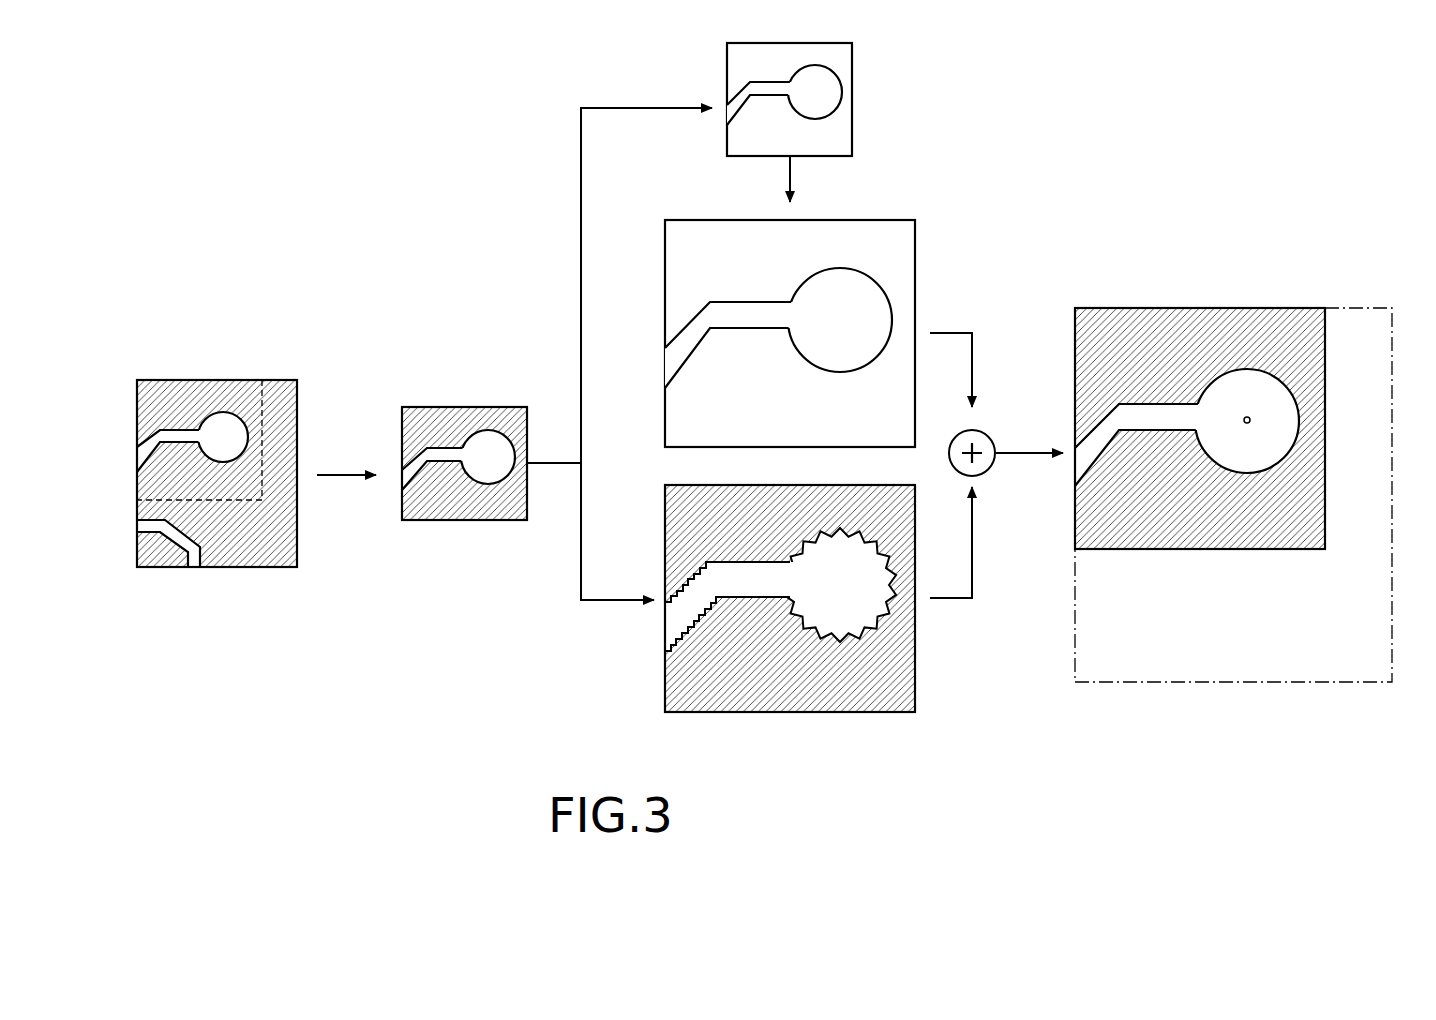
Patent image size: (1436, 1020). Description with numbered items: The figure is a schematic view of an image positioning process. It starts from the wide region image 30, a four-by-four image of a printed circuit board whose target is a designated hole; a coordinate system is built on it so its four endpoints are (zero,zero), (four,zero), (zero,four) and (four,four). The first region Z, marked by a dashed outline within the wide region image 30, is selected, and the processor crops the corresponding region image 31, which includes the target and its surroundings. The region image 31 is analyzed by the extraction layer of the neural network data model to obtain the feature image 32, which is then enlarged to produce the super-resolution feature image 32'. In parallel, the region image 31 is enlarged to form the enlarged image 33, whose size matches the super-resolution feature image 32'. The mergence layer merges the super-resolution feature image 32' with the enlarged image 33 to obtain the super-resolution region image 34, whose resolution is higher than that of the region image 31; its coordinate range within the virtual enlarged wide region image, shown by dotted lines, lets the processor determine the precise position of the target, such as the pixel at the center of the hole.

The wide region image 30 is at (250, 378).
The first region Z is at (263, 458).
The region image 31 is at (452, 400).
The feature image 32 is at (849, 95).
The super-resolution feature image 32' is at (853, 309).
The enlarged image 33 is at (810, 717).
The super-resolution region image 34 is at (1163, 306).